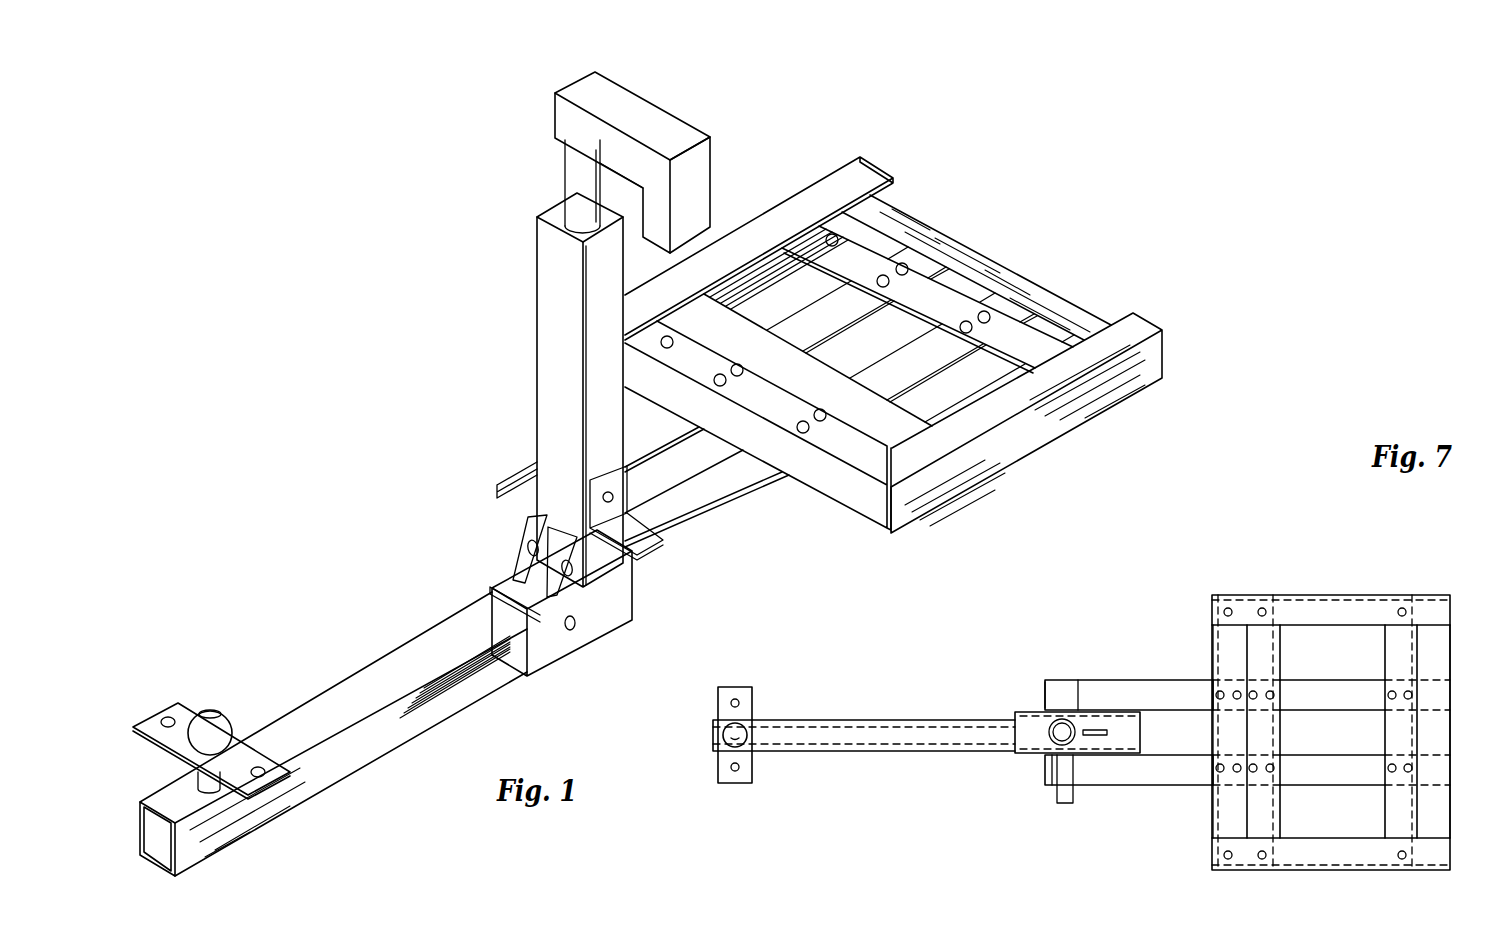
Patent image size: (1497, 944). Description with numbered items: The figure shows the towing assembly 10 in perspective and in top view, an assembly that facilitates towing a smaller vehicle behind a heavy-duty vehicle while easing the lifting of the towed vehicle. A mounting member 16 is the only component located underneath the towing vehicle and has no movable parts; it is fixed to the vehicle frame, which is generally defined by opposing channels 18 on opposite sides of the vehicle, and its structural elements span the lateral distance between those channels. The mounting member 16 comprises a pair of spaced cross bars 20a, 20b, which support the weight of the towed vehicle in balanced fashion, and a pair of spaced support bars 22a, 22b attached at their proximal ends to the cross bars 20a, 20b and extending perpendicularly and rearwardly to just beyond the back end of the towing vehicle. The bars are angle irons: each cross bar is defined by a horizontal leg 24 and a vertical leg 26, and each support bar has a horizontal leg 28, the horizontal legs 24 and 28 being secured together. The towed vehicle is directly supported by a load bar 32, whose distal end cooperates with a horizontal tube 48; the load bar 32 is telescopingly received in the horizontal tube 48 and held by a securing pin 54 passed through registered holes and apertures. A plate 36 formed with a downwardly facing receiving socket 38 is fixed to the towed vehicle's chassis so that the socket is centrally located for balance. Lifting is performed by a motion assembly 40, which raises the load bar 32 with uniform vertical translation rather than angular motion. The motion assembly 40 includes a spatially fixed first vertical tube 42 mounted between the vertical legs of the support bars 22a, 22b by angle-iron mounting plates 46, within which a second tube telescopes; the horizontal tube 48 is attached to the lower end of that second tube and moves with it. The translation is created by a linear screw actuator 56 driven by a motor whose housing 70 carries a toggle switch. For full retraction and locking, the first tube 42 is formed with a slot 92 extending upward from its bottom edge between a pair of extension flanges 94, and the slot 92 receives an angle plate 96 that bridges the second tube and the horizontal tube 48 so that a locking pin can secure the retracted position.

In FIG. 1, the towing assembly 10 is at (1068, 223).
In FIG. 7, the towing assembly 10 is at (933, 773).
In FIG. 1, the mounting member 16 is at (1160, 299).
In FIG. 7, the mounting member 16 is at (1165, 640).
In FIG. 1, the channels 18 is at (1085, 398).
In FIG. 1, the cross bar 20a is at (1005, 265).
In FIG. 7, the cross bar 20a is at (1435, 740).
In FIG. 1, the cross bar 20b is at (843, 520).
In FIG. 7, the cross bar 20b is at (1312, 658).
In FIG. 1, the support bar 22a is at (795, 301).
In FIG. 7, the support bar 22a is at (1100, 692).
In FIG. 1, the support bar 22b is at (765, 480).
In FIG. 7, the support bar 22b is at (1130, 790).
In FIG. 1, the horizontal leg 24 is at (1020, 350).
In FIG. 7, the horizontal leg 24 is at (1262, 815).
In FIG. 1, the vertical leg 26 is at (832, 295).
In FIG. 1, the horizontal leg 28 is at (710, 498).
In FIG. 7, the horizontal leg 28 is at (1058, 680).
In FIG. 1, the load bar 32 is at (365, 698).
In FIG. 7, the load bar 32 is at (877, 733).
In FIG. 1, the plate 36 is at (186, 717).
In FIG. 7, the plate 36 is at (727, 772).
In FIG. 1, the receiving socket 38 is at (218, 742).
In FIG. 7, the receiving socket 38 is at (727, 733).
In FIG. 1, the motion assembly 40 is at (527, 172).
In FIG. 1, the first vertical tube 42 is at (560, 322).
In FIG. 1, the mounting plates 46 is at (690, 550).
In FIG. 1, the horizontal tube 48 is at (626, 600).
In FIG. 7, the horizontal tube 48 is at (1030, 755).
In FIG. 1, the securing pin 54 is at (570, 632).
In FIG. 1, the linear screw actuator 56 is at (577, 196).
In FIG. 1, the motor housing 70 is at (700, 189).
In FIG. 1, the slot 92 is at (527, 588).
In FIG. 1, the extension flanges 94 is at (530, 540).
In FIG. 1, the angle plate 96 is at (511, 592).